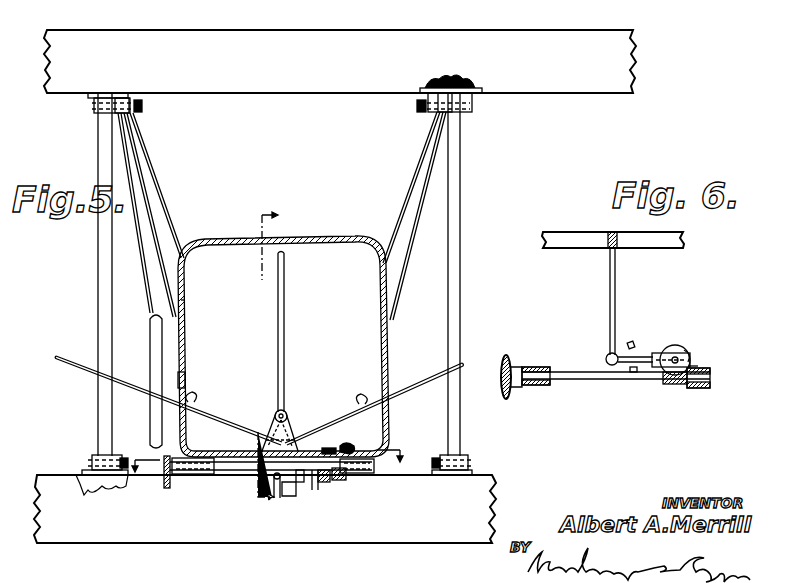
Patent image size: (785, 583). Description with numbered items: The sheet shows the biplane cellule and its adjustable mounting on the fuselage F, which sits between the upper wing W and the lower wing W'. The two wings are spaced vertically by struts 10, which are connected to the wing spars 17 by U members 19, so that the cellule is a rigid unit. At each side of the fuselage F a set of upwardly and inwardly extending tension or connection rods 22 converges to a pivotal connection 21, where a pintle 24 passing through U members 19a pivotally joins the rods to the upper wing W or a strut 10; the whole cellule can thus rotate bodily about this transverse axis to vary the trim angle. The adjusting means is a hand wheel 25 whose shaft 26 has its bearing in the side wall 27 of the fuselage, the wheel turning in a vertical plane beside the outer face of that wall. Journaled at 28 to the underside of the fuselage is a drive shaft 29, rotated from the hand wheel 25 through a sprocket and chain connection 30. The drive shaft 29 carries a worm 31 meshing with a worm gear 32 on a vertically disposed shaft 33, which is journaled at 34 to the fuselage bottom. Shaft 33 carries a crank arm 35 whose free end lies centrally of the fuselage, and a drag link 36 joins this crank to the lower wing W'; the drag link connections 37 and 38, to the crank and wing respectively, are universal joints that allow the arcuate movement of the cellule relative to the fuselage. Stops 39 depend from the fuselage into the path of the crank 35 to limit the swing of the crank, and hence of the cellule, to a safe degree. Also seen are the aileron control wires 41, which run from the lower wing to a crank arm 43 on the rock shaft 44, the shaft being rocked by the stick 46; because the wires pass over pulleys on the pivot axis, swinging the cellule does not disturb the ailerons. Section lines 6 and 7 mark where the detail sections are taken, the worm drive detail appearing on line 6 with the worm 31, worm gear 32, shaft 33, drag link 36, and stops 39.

In FIG. 5, the struts 10 is at (100, 278).
In FIG. 5, the spars 17 is at (474, 82).
In FIG. 5, the U members 19 is at (92, 462).
In FIG. 5, the U members 19a is at (88, 98).
In FIG. 5, the pivotal connections 21 is at (145, 104).
In FIG. 5, the tension or connection rods 22 is at (136, 231).
In FIG. 5, the pintle 24 is at (96, 114).
In FIG. 5, the hand wheel 25 is at (155, 333).
In FIG. 5, the shaft 26 is at (185, 372).
In FIG. 5, the side wall 27 is at (185, 327).
In FIG. 5, the journal 28 is at (186, 476).
In FIG. 6, the journal 28 is at (538, 386).
In FIG. 5, the drive shaft 29 is at (228, 472).
In FIG. 6, the drive shaft 29 is at (596, 380).
In FIG. 5, the sprocket and chain connection 30 is at (168, 487).
In FIG. 5, the worm 31 is at (342, 482).
In FIG. 6, the worm 31 is at (672, 386).
In FIG. 5, the worm gear 32 is at (325, 482).
In FIG. 6, the worm gear 32 is at (690, 356).
In FIG. 5, the vertically disposed shaft 33 is at (344, 448).
In FIG. 6, the vertically disposed shaft 33 is at (678, 348).
In FIG. 5, the journal 34 is at (322, 450).
In FIG. 6, the journal 34 is at (698, 366).
In FIG. 5, the crank arm 35 is at (314, 490).
In FIG. 6, the drag link 36 is at (610, 318).
In FIG. 6, the drag link connection 37 is at (606, 360).
In FIG. 6, the drag link connection 38 is at (612, 233).
In FIG. 5, the stops 39 is at (298, 500).
In FIG. 6, the stops 39 is at (634, 344).
In FIG. 5, the aileron control wires 41 is at (82, 366).
In FIG. 5, the crank arm 43 is at (288, 436).
In FIG. 5, the rock shaft 44 is at (286, 410).
In FIG. 5, the stick 46 is at (285, 318).
In FIG. 5, the section line 6— 6 is at (268, 451).
In FIG. 5, the section line 7— 7 is at (260, 354).
In FIG. 5, the fuselage F is at (333, 232).
In FIG. 5, the upper wing W is at (340, 79).
In FIG. 5, the lower wing W' is at (265, 524).